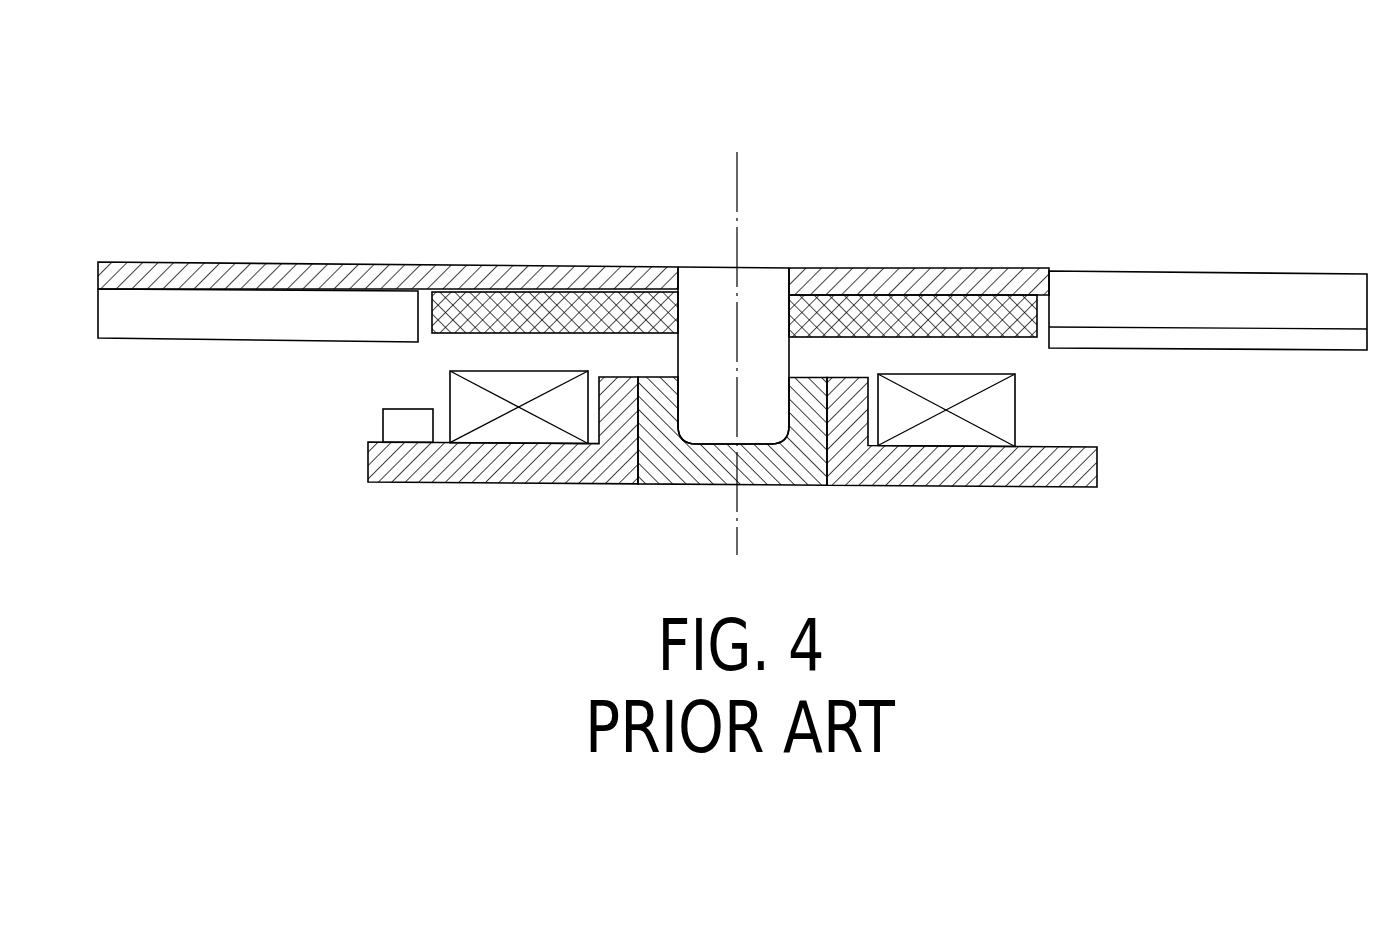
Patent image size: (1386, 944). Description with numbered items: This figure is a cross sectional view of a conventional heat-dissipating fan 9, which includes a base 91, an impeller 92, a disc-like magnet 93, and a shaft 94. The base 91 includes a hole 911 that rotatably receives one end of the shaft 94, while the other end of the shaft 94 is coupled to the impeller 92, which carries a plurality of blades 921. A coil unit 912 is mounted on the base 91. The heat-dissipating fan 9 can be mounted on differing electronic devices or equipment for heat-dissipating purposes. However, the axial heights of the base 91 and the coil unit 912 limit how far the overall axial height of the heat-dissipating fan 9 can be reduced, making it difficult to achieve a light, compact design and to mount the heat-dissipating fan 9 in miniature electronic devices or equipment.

The heat-dissipating fan 9 is at (180, 188).
The base 91 is at (977, 468).
The hole 911 is at (828, 428).
The coil unit 912 is at (1000, 402).
The impeller 92 is at (458, 267).
The blades 921 is at (1152, 293).
The disc-like magnet 93 is at (878, 287).
The shaft 94 is at (698, 283).